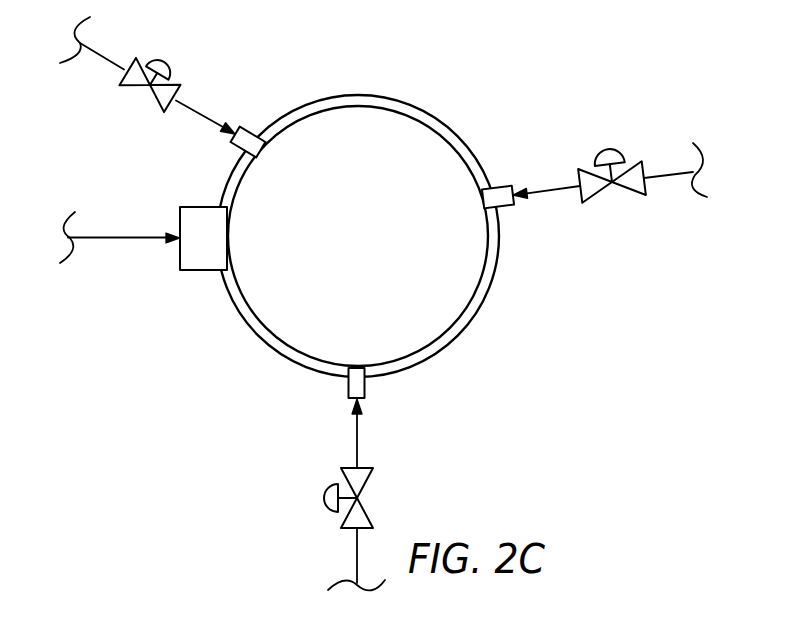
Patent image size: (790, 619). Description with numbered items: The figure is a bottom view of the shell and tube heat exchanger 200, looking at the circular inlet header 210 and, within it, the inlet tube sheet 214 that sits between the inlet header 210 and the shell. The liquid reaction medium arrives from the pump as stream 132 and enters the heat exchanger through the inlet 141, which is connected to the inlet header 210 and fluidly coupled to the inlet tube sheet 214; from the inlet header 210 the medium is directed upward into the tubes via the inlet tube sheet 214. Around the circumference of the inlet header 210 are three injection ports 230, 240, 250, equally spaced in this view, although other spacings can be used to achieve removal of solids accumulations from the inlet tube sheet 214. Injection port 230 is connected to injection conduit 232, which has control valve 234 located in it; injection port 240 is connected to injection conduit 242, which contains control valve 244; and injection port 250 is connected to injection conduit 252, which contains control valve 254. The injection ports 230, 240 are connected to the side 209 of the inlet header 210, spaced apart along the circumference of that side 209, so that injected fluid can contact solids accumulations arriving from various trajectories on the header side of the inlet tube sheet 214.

The shell and tube heat exchanger 200 is at (382, 224).
The inlet header 210 is at (373, 251).
The inlet tube sheet 214 is at (473, 317).
The side of the inlet header 209 is at (438, 339).
The stream 132 is at (125, 238).
The inlet 141 is at (197, 272).
The injection conduit 252 is at (103, 52).
The control valve 254 is at (153, 98).
The injection port 250 is at (234, 145).
The injection conduit 232 is at (557, 187).
The control valve 234 is at (607, 185).
The injection port 230 is at (500, 208).
The injection conduit 242 is at (357, 438).
The control valve 244 is at (363, 488).
The injection port 240 is at (366, 388).